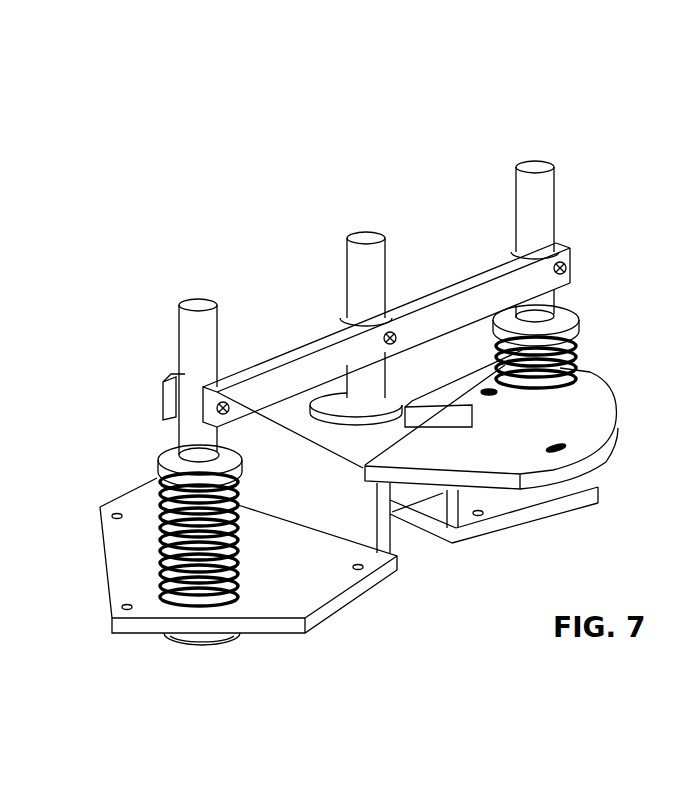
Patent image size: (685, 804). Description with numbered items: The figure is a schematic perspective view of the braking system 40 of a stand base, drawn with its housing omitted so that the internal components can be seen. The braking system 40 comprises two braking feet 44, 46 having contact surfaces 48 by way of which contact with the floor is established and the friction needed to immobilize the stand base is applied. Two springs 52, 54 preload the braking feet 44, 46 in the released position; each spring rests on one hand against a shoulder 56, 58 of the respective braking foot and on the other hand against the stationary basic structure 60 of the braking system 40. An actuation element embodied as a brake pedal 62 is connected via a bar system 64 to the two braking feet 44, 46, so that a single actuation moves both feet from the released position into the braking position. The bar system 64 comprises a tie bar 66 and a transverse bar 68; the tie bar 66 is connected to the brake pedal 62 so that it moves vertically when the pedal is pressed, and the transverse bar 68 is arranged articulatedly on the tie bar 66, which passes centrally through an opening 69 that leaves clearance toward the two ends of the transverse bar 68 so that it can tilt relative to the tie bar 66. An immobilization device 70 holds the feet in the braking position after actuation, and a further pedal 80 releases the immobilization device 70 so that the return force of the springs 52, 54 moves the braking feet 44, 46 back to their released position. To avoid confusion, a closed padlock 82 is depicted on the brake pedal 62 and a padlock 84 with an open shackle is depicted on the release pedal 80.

The braking system 40 is at (257, 168).
The braking foot 44 is at (197, 348).
The braking foot 46 is at (543, 207).
The contact surface 48 is at (204, 643).
The spring 52 is at (228, 557).
The spring 54 is at (571, 365).
The shoulder 56 is at (231, 456).
The shoulder 58 is at (566, 312).
The basic structure 60 is at (316, 582).
The brake pedal 62 is at (583, 443).
The bar system 64 is at (390, 166).
The tie bar 66 is at (360, 273).
The transverse bar 68 is at (468, 247).
The opening 69 is at (345, 314).
The immobilization device 70 is at (415, 383).
The pedal 80 is at (507, 382).
The closed padlock symbol 82 is at (546, 455).
The open padlock symbol 84 is at (486, 392).